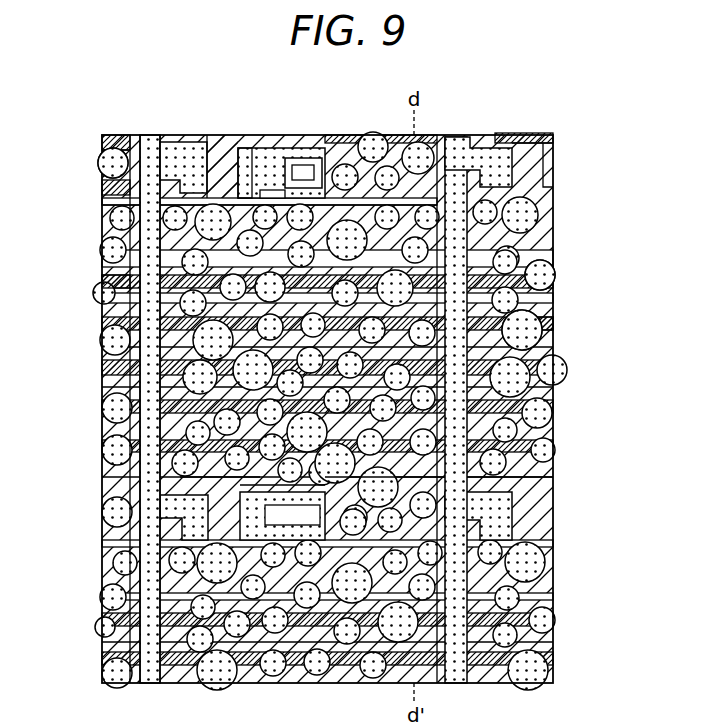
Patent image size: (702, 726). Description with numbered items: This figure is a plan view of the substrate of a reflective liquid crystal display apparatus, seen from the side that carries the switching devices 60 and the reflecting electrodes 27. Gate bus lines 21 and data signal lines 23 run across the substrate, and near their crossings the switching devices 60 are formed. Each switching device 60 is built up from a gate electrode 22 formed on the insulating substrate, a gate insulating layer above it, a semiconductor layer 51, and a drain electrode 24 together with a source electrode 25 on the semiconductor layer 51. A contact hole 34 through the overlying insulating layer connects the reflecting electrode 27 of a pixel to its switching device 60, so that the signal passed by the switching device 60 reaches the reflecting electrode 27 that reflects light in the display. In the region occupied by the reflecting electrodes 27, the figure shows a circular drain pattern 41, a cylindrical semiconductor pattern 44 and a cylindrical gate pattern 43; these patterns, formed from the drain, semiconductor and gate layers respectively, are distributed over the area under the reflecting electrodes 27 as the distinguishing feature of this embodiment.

The switching device 60 is at (340, 112).
The drain electrode 24 is at (168, 137).
The gate electrode 22 is at (219, 137).
The semiconductor layer 51 is at (241, 137).
The source electrode 25 is at (300, 137).
The contact hole 34 is at (322, 140).
The data signal line 23 is at (112, 175).
The gate bus line 21 is at (145, 237).
The reflecting electrode 27 is at (104, 273).
The circular drain pattern 41 is at (556, 281).
The cylindrical gate pattern 43 is at (547, 313).
The cylindrical semiconductor pattern 44 is at (545, 330).